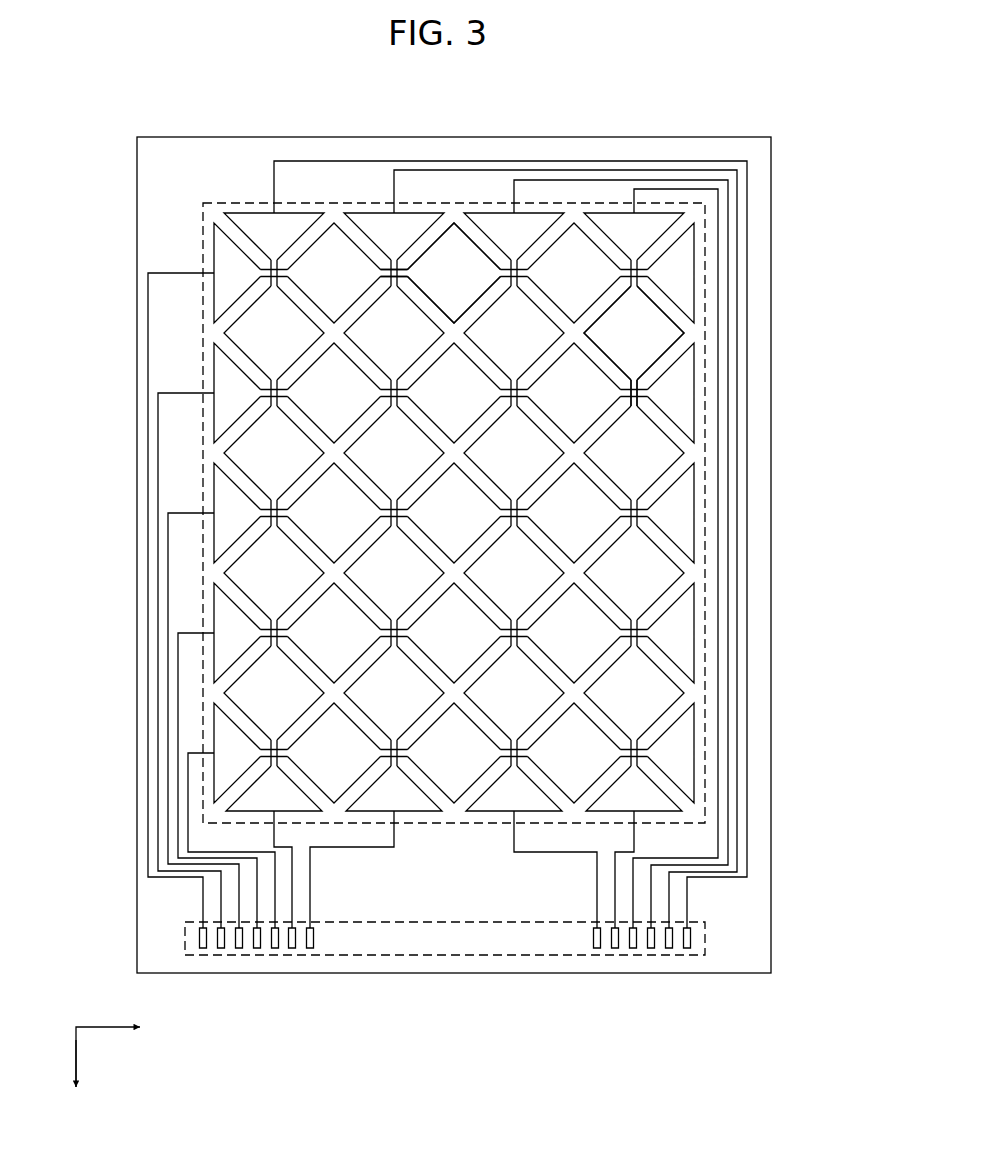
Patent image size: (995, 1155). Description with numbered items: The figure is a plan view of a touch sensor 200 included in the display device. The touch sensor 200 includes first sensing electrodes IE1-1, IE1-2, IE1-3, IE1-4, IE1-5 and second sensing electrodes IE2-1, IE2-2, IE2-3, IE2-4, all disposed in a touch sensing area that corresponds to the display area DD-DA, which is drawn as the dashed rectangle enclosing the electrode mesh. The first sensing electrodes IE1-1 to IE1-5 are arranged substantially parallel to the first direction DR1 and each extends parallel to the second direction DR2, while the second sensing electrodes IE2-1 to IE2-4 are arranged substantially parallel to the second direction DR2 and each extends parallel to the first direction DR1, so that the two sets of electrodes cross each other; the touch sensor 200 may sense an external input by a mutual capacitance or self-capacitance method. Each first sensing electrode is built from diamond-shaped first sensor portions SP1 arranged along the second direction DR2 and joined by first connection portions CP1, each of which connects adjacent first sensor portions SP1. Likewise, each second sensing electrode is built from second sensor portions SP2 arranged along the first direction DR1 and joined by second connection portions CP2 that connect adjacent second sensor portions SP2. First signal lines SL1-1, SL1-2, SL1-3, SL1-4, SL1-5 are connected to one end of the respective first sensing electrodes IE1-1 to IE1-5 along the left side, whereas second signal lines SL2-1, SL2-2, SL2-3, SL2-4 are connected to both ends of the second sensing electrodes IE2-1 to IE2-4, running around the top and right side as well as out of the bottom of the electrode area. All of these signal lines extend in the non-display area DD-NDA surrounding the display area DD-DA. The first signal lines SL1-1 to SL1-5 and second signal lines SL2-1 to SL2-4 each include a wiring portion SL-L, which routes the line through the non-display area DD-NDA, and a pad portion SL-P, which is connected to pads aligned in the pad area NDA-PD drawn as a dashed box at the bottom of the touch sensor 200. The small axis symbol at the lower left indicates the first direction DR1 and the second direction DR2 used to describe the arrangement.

The touch sensor 200 is at (820, 106).
The first sensing electrode IE1-1 is at (210, 249).
The first sensing electrode IE1-2 is at (210, 369).
The first sensing electrode IE1-3 is at (210, 488).
The first sensing electrode IE1-4 is at (210, 608).
The first sensing electrode IE1-5 is at (210, 728).
The second sensing electrode IE2-1 is at (250, 210).
The second sensing electrode IE2-2 is at (370, 210).
The second sensing electrode IE2-3 is at (533, 210).
The second sensing electrode IE2-4 is at (652, 210).
The first sensor portion SP1 is at (460, 245).
The first connection portion CP1 is at (398, 262).
The second sensor portion SP2 is at (647, 352).
The second connection portion CP2 is at (637, 383).
The first signal line SL1-1 is at (148, 303).
The first signal line SL1-2 is at (158, 430).
The first signal line SL1-3 is at (168, 545).
The first signal line SL1-4 is at (178, 665).
The first signal line SL1-5 is at (188, 803).
The second signal line SL2-1 is at (748, 218).
The second signal line SL2-2 is at (738, 247).
The second signal line SL2-3 is at (728, 285).
The second signal line SL2-4 is at (718, 320).
The display area DD-DA is at (707, 519).
The non-display area DD-NDA is at (759, 558).
The wiring portion SL-L is at (752, 850).
The pad portion SL-P is at (690, 937).
The pad area NDA-PD is at (706, 952).
The first direction DR1 is at (81, 1080).
The second direction DR2 is at (132, 1053).